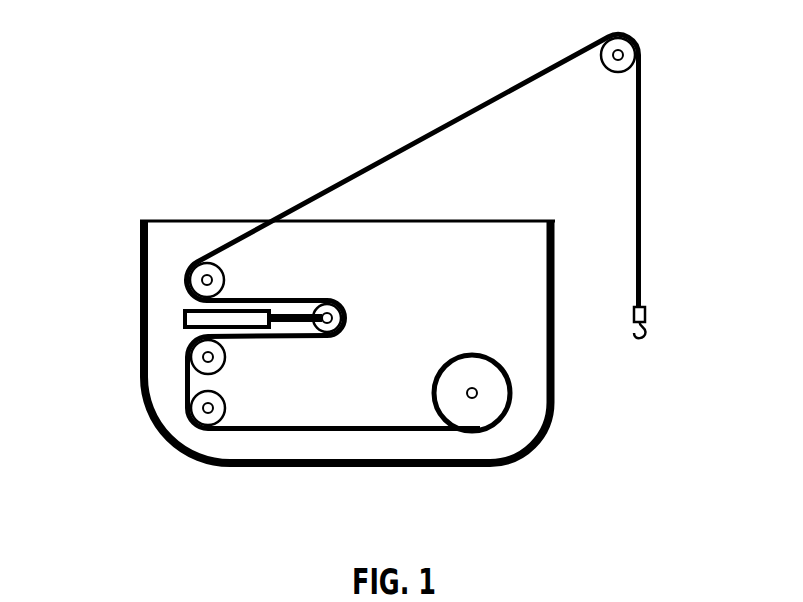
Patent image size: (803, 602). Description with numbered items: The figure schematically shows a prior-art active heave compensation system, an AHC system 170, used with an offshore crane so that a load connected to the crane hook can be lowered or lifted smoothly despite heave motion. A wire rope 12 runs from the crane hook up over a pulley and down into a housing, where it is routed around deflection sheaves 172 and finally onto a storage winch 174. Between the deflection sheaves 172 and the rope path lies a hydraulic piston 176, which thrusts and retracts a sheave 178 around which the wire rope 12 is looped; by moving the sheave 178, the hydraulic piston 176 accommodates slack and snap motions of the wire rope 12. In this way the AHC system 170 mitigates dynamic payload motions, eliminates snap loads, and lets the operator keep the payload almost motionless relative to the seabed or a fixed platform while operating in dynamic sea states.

The AHC system 170 is at (150, 58).
The wire rope 12 is at (402, 148).
The hydraulic piston 176 is at (183, 318).
The sheave 178 is at (325, 300).
The deflection sheaves 172 is at (185, 381).
The storage winch 174 is at (472, 355).